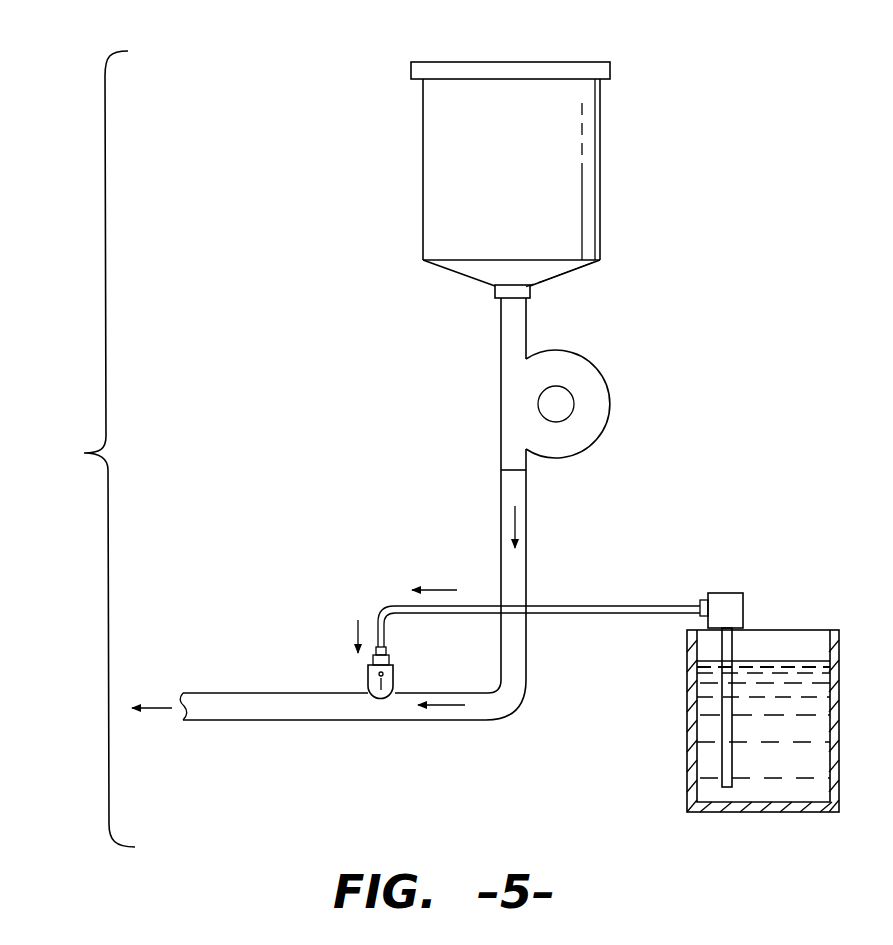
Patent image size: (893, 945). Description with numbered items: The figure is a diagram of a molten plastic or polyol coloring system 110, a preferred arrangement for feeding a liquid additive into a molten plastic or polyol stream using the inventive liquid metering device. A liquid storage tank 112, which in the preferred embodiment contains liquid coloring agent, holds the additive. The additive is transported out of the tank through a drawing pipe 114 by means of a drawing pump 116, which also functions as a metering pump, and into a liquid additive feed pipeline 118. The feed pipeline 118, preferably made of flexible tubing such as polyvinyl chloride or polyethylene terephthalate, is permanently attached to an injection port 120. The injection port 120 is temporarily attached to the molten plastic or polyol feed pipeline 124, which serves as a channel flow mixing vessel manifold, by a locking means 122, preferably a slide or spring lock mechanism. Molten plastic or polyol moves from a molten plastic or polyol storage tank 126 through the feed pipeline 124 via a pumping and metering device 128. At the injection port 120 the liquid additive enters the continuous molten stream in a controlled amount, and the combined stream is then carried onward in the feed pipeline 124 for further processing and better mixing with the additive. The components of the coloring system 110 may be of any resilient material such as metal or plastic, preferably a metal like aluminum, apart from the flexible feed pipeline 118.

The molten plastic or polyol coloring system 110 is at (83, 449).
The liquid storage tank 112 is at (780, 630).
The drawing pipe 114 is at (722, 730).
The drawing pump 116 is at (727, 593).
The liquid additive feed pipeline 118 is at (589, 604).
The injection port 120 is at (393, 682).
The locking means 122 is at (368, 682).
The molten plastic or polyol feed pipeline 124 is at (273, 693).
The molten plastic or polyol storage tank 126 is at (557, 62).
The pumping and metering device 128 is at (583, 357).